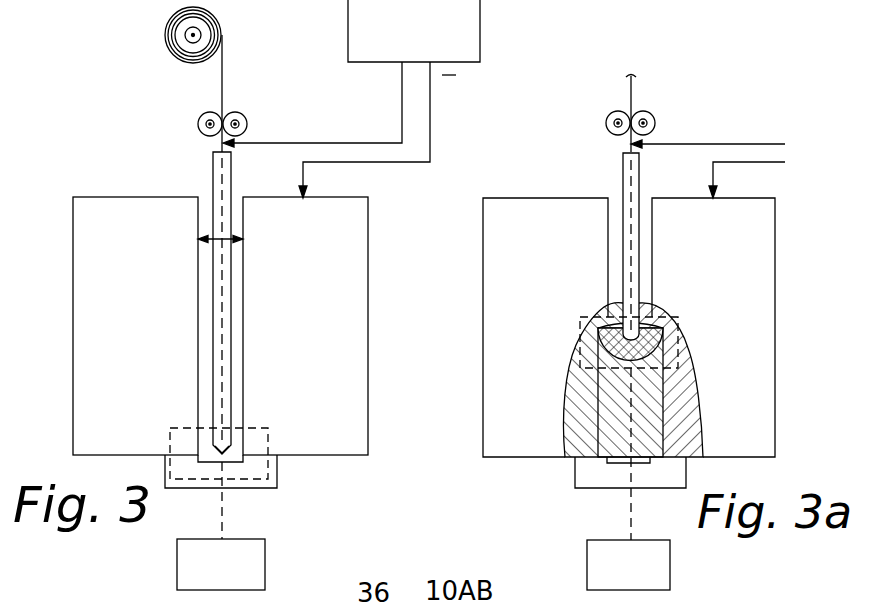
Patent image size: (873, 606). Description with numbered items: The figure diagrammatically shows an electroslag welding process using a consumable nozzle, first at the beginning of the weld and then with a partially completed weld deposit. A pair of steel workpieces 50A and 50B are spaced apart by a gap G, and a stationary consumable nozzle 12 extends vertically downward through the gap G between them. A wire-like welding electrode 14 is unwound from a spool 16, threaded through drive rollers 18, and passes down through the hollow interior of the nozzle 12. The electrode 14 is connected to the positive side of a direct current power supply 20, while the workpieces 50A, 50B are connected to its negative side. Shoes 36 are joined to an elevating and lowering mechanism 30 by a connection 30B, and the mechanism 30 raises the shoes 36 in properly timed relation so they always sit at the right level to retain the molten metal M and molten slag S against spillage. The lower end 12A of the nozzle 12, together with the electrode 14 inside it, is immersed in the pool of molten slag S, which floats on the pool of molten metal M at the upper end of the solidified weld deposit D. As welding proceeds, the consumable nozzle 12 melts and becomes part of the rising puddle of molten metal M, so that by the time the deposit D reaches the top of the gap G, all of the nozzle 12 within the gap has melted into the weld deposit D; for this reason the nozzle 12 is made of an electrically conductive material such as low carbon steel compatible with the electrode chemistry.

In FIG. 3, the consumable nozzle 12 is at (232, 390).
In FIG. 3A, the consumable nozzle 12 is at (641, 277).
In FIG. 3, the lower end of nozzle 12A is at (216, 450).
In FIG. 3, the wire-like welding electrode 14 is at (224, 80).
In FIG. 3A, the wire-like welding electrode 14 is at (633, 93).
In FIG. 3, the spool 16 is at (183, 49).
In FIG. 3, the drive rollers 18 is at (222, 114).
In FIG. 3A, the drive rollers 18 is at (629, 120).
In FIG. 3, the direct current power supply 20 is at (478, 45).
In FIG. 3, the elevating and lowering mechanism 30 is at (257, 553).
In FIG. 3A, the elevating and lowering mechanism 30 is at (662, 570).
In FIG. 3, the connection 30B is at (222, 508).
In FIG. 3A, the connection 30B is at (628, 515).
In FIG. 3, the shoes 36 is at (268, 437).
In FIG. 3A, the shoes 36 is at (580, 355).
In FIG. 3, the steel workpiece 50A is at (172, 318).
In FIG. 3A, the steel workpiece 50A is at (573, 260).
In FIG. 3, the steel workpiece 50B is at (333, 318).
In FIG. 3A, the steel workpiece 50B is at (747, 250).
In FIG. 3, the gap G is at (243, 239).
In FIG. 3A, the molten slag S is at (643, 322).
In FIG. 3A, the molten metal M is at (652, 352).
In FIG. 3A, the weld deposit D is at (655, 392).